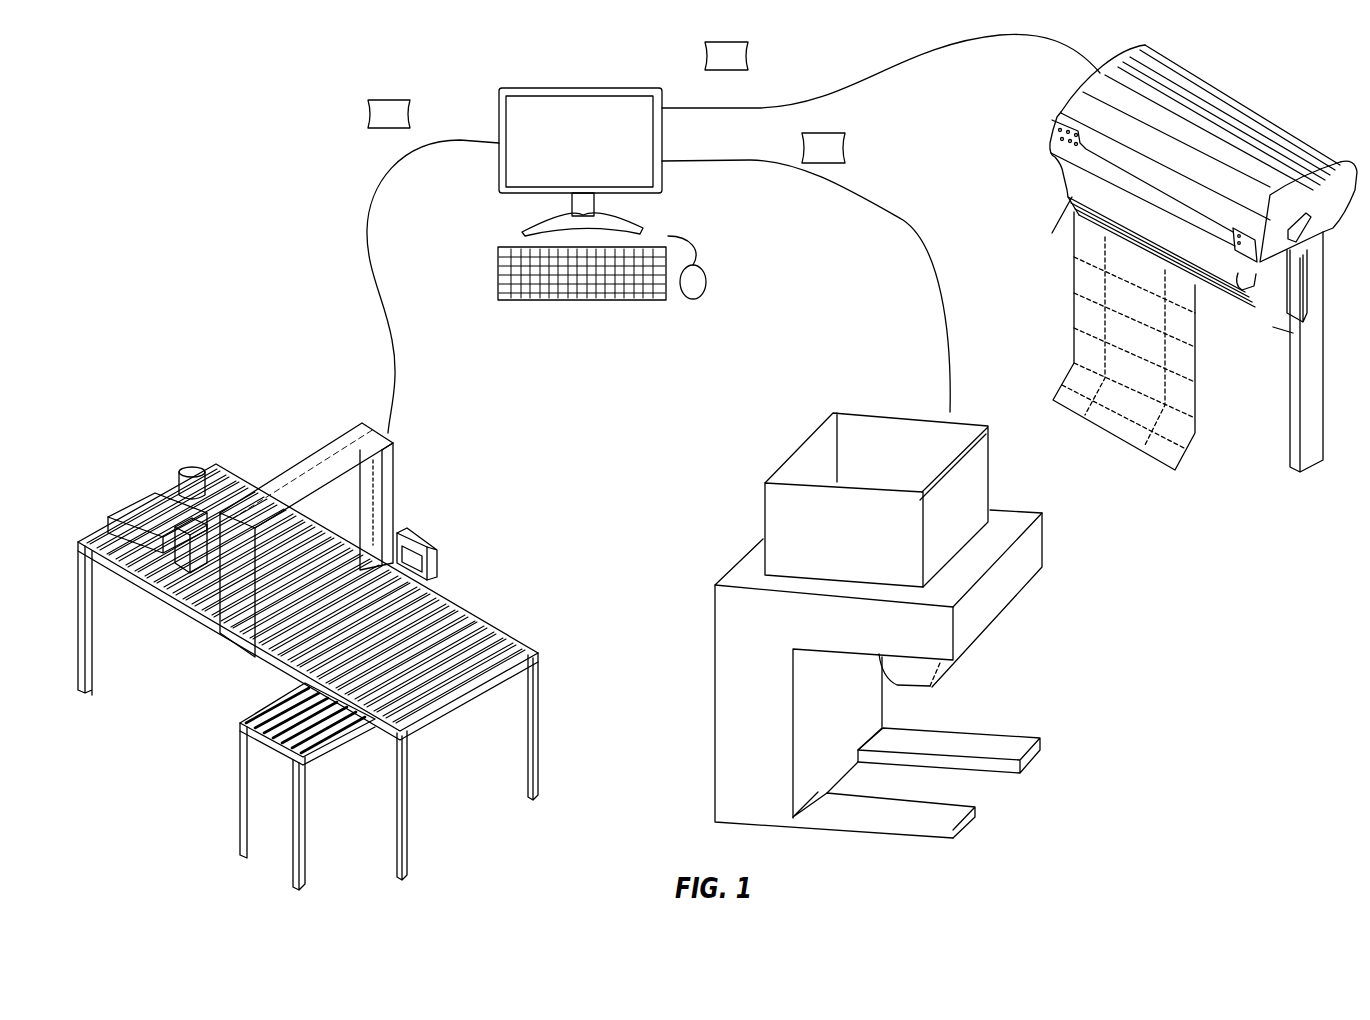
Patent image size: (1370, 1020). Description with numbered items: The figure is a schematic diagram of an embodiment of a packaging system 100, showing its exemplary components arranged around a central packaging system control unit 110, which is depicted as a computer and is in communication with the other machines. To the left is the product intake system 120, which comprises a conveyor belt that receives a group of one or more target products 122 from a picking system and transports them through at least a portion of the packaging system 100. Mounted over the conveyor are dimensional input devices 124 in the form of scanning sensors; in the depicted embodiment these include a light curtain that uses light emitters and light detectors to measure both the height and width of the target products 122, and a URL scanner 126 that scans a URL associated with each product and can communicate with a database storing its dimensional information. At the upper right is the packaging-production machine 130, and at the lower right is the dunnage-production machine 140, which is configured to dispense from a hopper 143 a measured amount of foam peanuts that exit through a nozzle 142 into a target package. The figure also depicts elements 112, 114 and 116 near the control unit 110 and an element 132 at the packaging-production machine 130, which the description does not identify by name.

The packaging system 100 is at (228, 166).
The packaging system control unit 110 is at (557, 88).
The memory device 112 is at (395, 104).
The memory device 114 is at (738, 55).
The memory device 116 is at (835, 150).
The product intake system 120 is at (222, 396).
The target products 122 is at (135, 480).
The dimensional input devices 124 is at (334, 452).
The URL scanner 126 is at (420, 535).
The packaging-production machine 130 is at (1275, 84).
The printed sheet 132 is at (1175, 452).
The dunnage-production machine 140 is at (803, 392).
The nozzle 142 is at (922, 688).
The hopper 143 is at (983, 468).